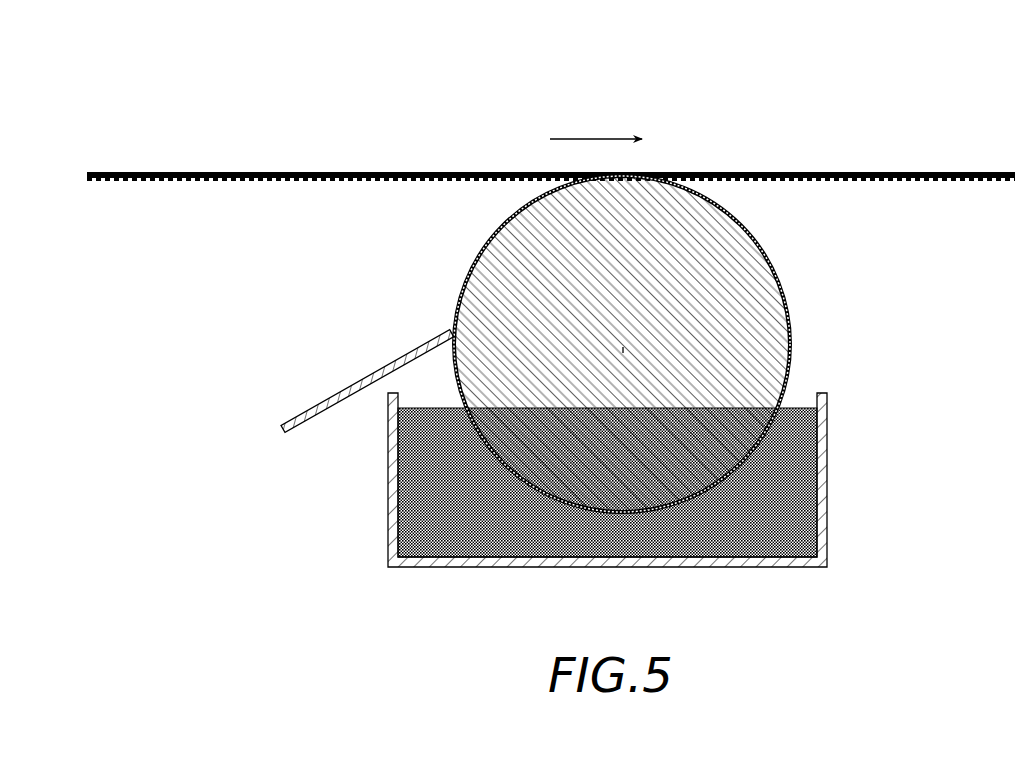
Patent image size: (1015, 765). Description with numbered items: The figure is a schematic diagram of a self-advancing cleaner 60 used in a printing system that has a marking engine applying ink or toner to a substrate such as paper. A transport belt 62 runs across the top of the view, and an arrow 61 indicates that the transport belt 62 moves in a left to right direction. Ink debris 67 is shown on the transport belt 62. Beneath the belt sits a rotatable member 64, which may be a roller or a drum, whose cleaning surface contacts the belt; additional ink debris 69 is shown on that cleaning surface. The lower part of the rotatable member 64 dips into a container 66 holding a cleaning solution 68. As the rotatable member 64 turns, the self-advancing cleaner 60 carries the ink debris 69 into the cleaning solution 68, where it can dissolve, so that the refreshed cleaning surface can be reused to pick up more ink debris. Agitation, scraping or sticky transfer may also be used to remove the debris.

The self-advancing cleaner 60 is at (841, 105).
The arrow 61 is at (590, 138).
The transport belt 62 is at (958, 172).
The rotatable member 64 is at (762, 325).
The tray 66 is at (828, 459).
The ink debris 67 is at (277, 183).
The cleaning solution 68 is at (738, 533).
The ink debris 69 is at (765, 253).